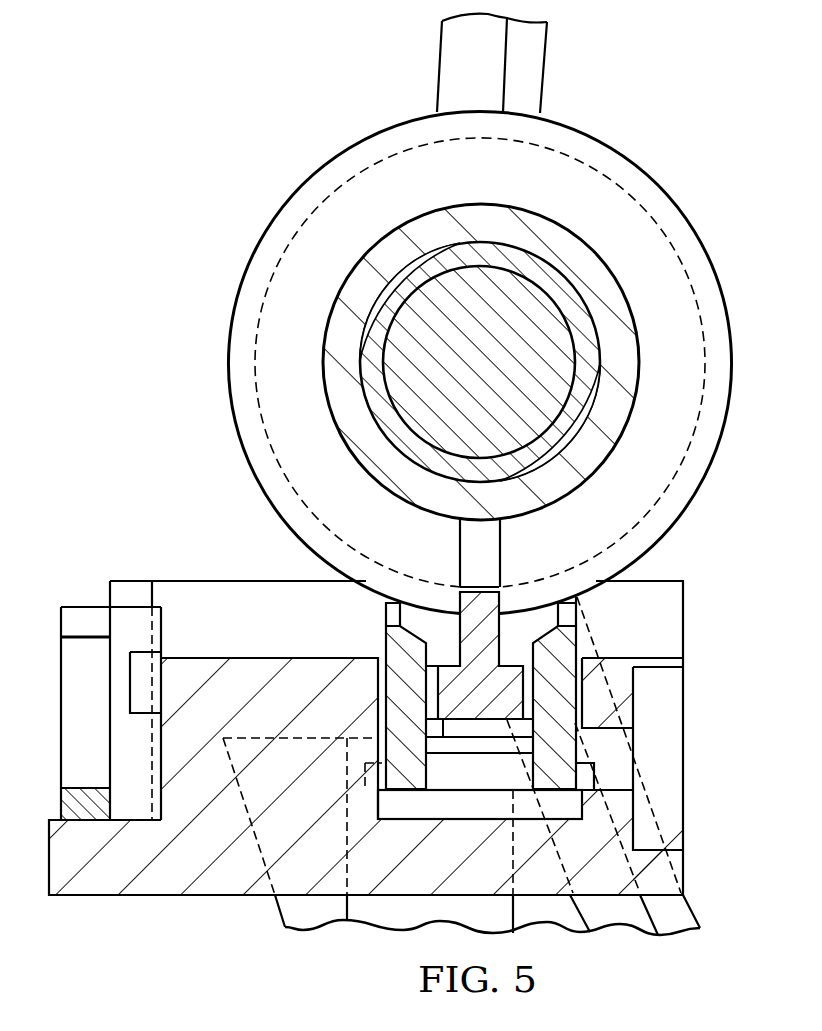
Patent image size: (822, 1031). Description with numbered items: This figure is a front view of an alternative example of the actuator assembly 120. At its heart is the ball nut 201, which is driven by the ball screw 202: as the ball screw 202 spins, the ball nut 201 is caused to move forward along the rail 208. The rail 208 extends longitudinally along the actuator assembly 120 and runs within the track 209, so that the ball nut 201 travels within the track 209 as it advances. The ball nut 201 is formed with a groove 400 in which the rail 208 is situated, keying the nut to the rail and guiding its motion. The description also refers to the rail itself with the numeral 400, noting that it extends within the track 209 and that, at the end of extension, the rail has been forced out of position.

The actuator assembly 120 is at (258, 79).
The ball nut 201 is at (485, 213).
The ball screw 202 is at (527, 318).
The rail 208 is at (467, 602).
The groove 400 is at (511, 601).
The track 209 is at (562, 748).